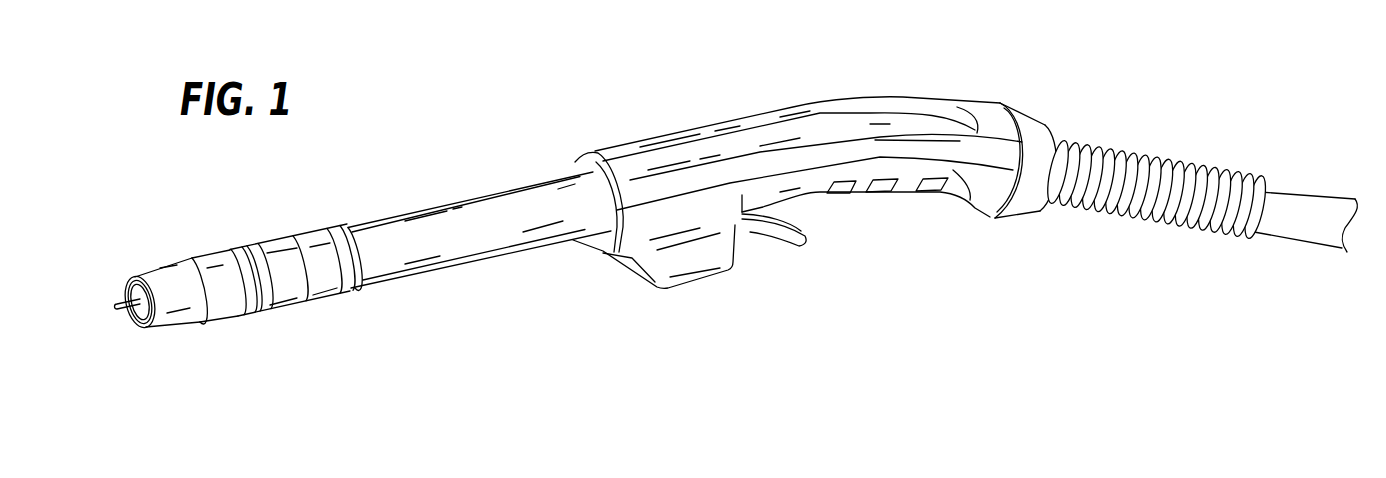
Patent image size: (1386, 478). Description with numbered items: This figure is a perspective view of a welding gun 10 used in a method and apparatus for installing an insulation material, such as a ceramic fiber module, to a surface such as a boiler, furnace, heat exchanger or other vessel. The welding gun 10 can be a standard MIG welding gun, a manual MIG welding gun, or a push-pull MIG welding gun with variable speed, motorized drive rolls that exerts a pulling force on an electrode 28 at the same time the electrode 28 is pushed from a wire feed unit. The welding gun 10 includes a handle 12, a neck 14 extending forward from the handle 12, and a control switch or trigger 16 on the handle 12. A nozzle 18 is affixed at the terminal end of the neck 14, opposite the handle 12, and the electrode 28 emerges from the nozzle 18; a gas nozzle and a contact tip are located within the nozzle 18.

The welding gun 10 is at (1160, 62).
The handle 12 is at (908, 170).
The neck 14 is at (492, 135).
The control switch or trigger 16 is at (757, 232).
The nozzle 18 is at (205, 270).
The electrode 28 is at (120, 313).